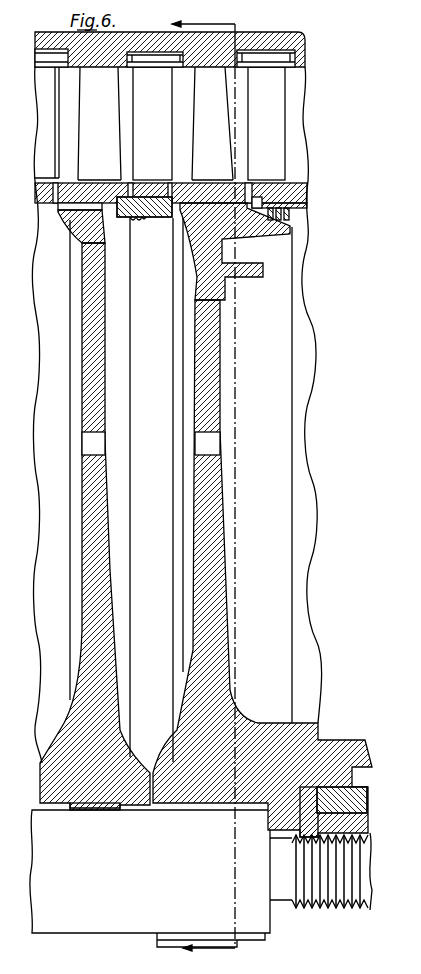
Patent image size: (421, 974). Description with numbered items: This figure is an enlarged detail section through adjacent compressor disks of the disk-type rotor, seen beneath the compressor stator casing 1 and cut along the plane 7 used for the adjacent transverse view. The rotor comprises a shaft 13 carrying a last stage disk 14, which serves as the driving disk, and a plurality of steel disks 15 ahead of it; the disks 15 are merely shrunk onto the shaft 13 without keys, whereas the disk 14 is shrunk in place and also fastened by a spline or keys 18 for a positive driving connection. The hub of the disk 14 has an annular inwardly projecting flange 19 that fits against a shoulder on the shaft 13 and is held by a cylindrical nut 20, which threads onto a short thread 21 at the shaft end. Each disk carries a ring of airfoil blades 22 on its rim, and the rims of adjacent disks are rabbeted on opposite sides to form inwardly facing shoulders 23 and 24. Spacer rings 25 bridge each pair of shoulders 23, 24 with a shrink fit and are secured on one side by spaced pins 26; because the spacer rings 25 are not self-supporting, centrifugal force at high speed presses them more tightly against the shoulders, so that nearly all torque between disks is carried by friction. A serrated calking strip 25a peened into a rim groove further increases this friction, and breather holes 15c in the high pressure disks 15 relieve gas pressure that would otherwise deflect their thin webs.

The compressor stator casing 1 is at (40, 30).
The section plane 7- 7 is at (196, 488).
The shaft 13 is at (150, 878).
The last stage disk 14 is at (195, 490).
The disks 15 is at (102, 515).
The balancing or breather holes 15c is at (200, 445).
The spline or keys 18 is at (213, 803).
The annular inwardly projecting flange 19 is at (280, 819).
The cylindrical nut 20 is at (357, 833).
The short thread 21 is at (353, 823).
The blades 22 is at (155, 123).
The inwardly facing shoulder 23 is at (62, 183).
The inwardly facing shoulder 24 is at (120, 184).
The spacer ring 25 is at (150, 210).
The serrated calking strip 25a is at (137, 222).
The pins 26 is at (103, 210).